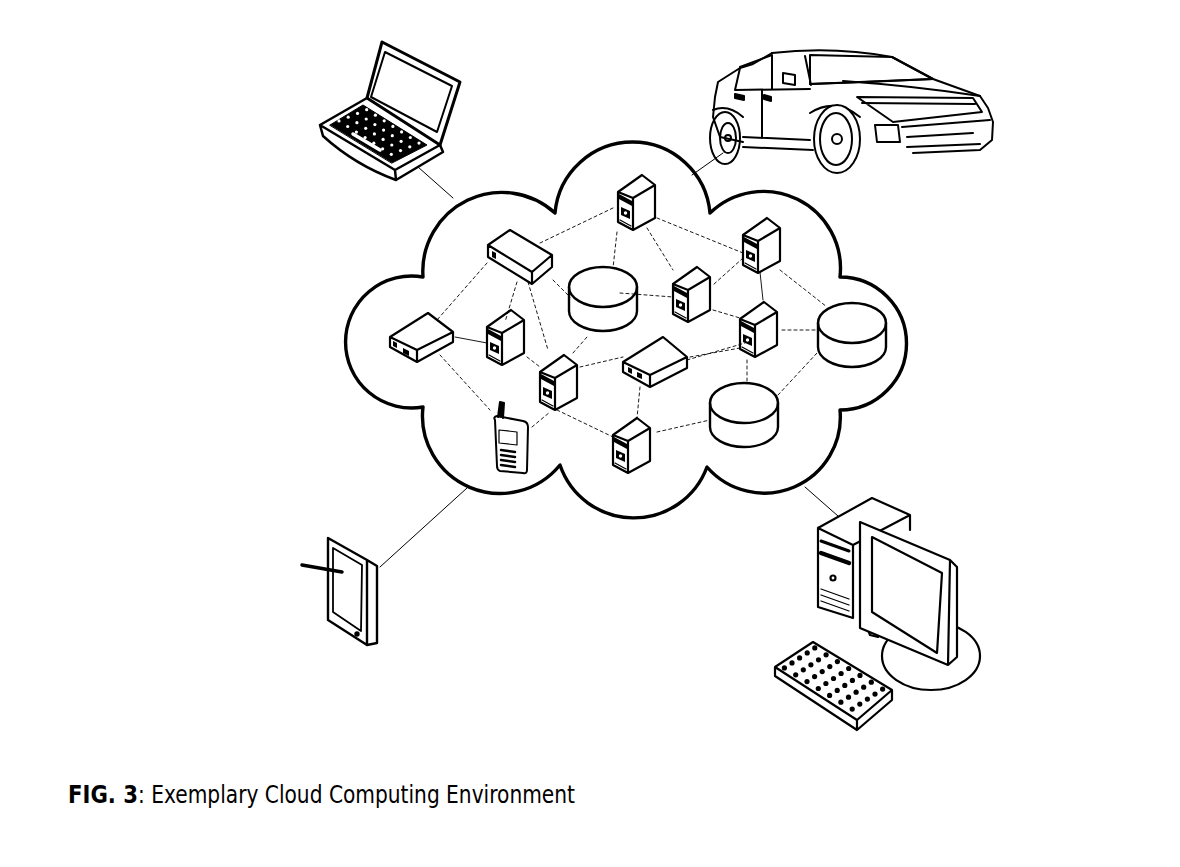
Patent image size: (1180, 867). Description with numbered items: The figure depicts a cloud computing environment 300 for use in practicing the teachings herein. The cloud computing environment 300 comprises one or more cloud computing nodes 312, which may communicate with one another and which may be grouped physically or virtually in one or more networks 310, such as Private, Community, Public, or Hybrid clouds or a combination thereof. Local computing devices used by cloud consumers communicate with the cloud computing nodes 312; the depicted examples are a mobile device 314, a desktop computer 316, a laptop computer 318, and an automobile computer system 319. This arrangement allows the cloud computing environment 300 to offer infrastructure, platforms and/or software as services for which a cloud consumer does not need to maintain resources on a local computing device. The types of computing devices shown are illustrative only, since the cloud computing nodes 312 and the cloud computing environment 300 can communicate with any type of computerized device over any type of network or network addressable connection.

The cloud computing environment 300 is at (1043, 108).
The network 310 is at (622, 515).
The cloud computing node 312 is at (567, 433).
The mobile device 314 is at (342, 633).
The desktop computer 316 is at (923, 690).
The laptop computer 318 is at (375, 177).
The automobile computer system 319 is at (930, 157).